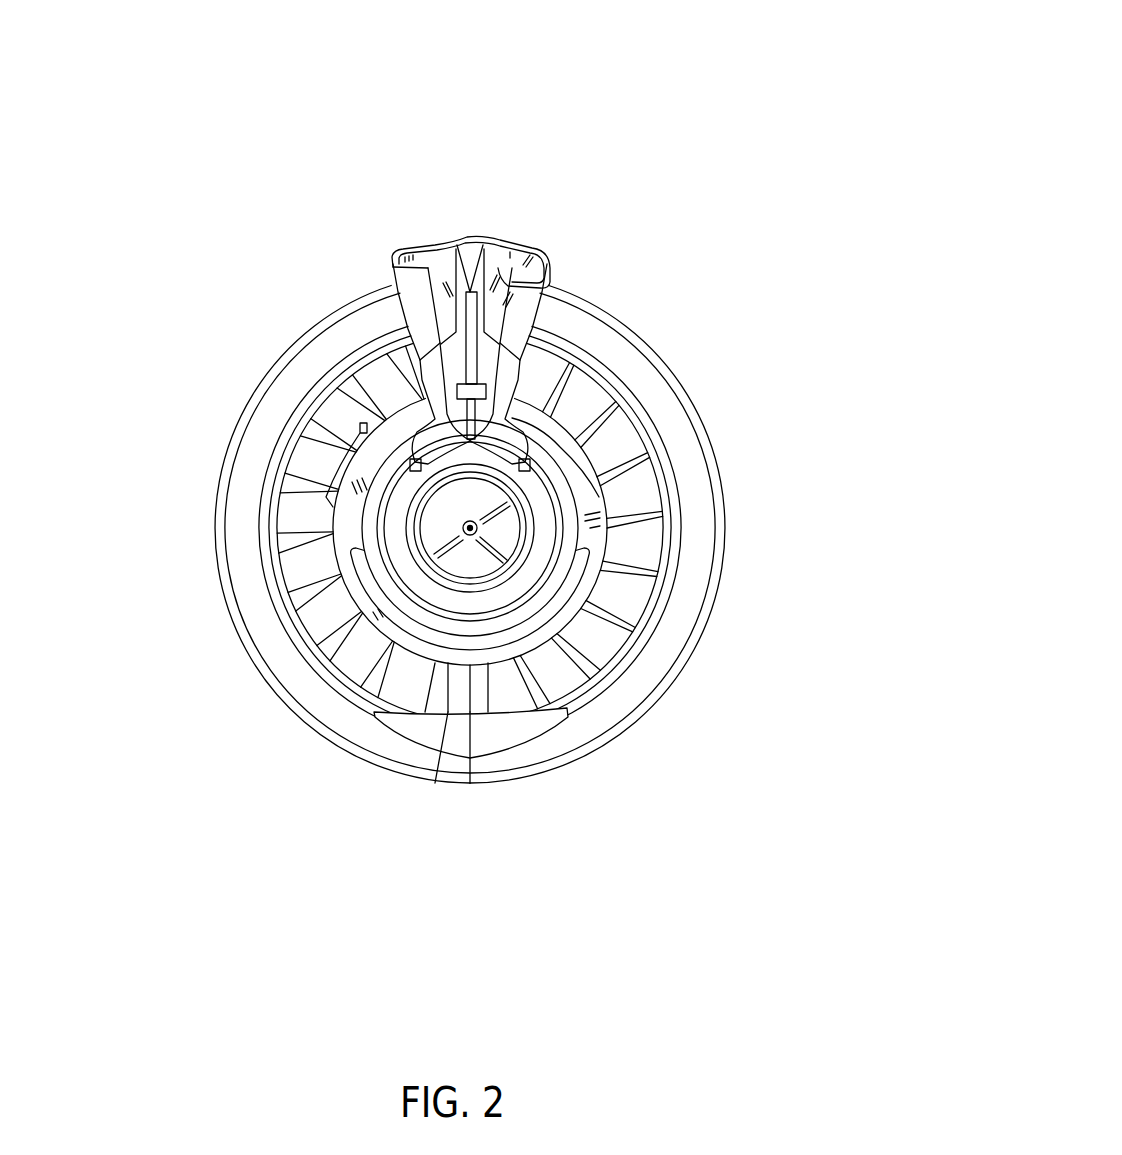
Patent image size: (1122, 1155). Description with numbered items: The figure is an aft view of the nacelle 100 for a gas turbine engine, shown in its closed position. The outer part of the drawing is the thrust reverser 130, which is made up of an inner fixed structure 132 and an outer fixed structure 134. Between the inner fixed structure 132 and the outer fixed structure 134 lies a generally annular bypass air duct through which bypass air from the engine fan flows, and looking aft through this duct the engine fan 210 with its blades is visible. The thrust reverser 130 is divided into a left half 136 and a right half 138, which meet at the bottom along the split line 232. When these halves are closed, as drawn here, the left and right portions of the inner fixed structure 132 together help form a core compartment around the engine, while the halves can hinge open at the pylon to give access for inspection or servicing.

The nacelle 100 is at (652, 178).
The thrust reverser 130 is at (240, 552).
The inner fixed structure 132 is at (555, 442).
The outer fixed structure 134 is at (650, 458).
The left half 136 is at (270, 677).
The right half 138 is at (628, 718).
The engine fan 210 is at (625, 603).
The split line 232 is at (472, 744).